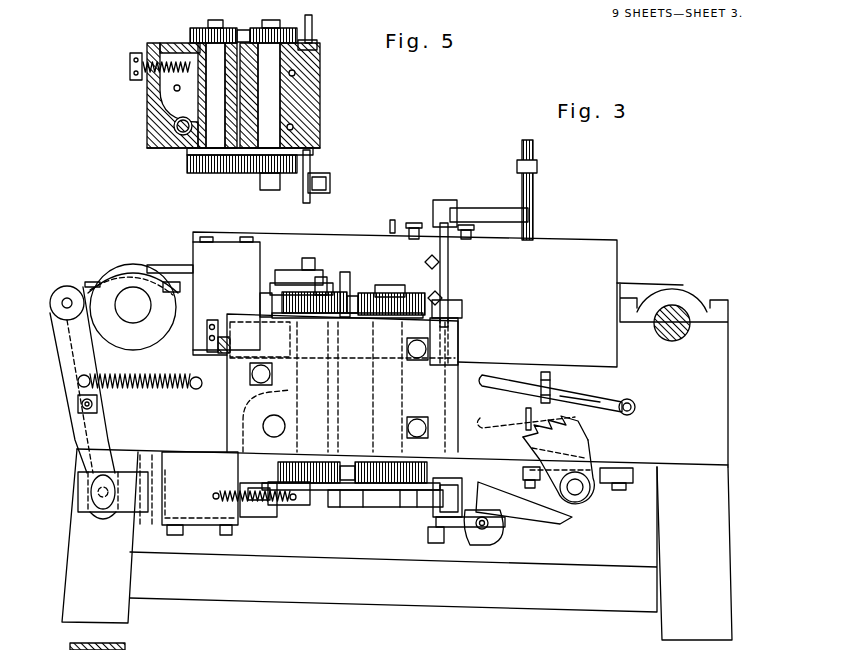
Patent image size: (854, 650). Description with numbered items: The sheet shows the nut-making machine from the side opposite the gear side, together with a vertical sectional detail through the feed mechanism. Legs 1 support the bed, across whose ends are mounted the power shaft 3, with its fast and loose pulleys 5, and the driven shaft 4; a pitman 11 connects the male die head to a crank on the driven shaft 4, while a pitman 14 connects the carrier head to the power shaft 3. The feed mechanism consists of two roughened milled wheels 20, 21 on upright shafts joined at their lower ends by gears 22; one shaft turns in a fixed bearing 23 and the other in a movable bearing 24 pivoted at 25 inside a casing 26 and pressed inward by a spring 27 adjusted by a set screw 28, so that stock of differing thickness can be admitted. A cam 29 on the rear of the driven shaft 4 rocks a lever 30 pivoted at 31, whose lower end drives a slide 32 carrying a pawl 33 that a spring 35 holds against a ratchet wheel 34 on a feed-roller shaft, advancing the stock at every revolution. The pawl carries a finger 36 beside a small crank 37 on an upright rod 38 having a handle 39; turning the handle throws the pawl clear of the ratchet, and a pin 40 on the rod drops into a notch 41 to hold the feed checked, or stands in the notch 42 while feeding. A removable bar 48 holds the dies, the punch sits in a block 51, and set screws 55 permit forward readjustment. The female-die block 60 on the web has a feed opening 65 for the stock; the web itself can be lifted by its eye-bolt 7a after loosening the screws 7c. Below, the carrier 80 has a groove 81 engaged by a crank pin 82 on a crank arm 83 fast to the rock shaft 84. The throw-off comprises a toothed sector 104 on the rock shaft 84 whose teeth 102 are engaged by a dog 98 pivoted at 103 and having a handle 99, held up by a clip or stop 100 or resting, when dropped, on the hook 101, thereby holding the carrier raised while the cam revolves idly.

In FIG. 3, the legs 1 is at (75, 598).
In FIG. 3, the power shaft 3 is at (682, 310).
In FIG. 3, the driven shaft 4 is at (128, 300).
In FIG. 3, the fast and loose pulleys 5 is at (352, 318).
In FIG. 3, the ring or eye-bolt 7a is at (393, 220).
In FIG. 3, the screws 7c is at (440, 264).
In FIG. 3, the pitman 11 is at (163, 270).
In FIG. 3, the pitman 14 is at (645, 283).
In FIG. 5, the milled wheel 20 is at (205, 35).
In FIG. 3, the milled wheel 20 is at (312, 318).
In FIG. 5, the milled wheel 21 is at (298, 40).
In FIG. 3, the milled wheel 21 is at (394, 318).
In FIG. 5, the gears 22 is at (232, 173).
In FIG. 3, the gears 22 is at (300, 486).
In FIG. 5, the fixed bearing 23 is at (320, 100).
In FIG. 5, the movable bearing 24 is at (193, 93).
In FIG. 3, the movable bearing 24 is at (243, 404).
In FIG. 5, the pivot 25 is at (152, 135).
In FIG. 3, the pivot 25 is at (280, 426).
In FIG. 5, the casing 26 is at (147, 100).
In FIG. 3, the casing 26 is at (233, 393).
In FIG. 5, the spring 27 is at (183, 45).
In FIG. 3, the spring 27 is at (262, 312).
In FIG. 5, the set screw 28 is at (130, 66).
In FIG. 3, the set screw 28 is at (207, 338).
In FIG. 3, the cam 29 is at (88, 296).
In FIG. 3, the lever 30 is at (65, 345).
In FIG. 3, the pivot 31 is at (78, 403).
In FIG. 3, the slide 32 is at (107, 536).
In FIG. 3, the pawl 33 is at (322, 500).
In FIG. 3, the ratchet wheel 34 is at (400, 514).
In FIG. 3, the spring 35 is at (224, 494).
In FIG. 3, the finger 36 is at (505, 530).
In FIG. 5, the small crank 37 is at (330, 181).
In FIG. 3, the small crank 37 is at (460, 528).
In FIG. 5, the upright rod 38 is at (310, 160).
In FIG. 3, the upright rod 38 is at (448, 277).
In FIG. 3, the handle 39 is at (488, 210).
In FIG. 5, the pin 40 is at (317, 50).
In FIG. 3, the pin 40 is at (448, 333).
In FIG. 3, the notch 41 is at (464, 312).
In FIG. 3, the notch 42 is at (455, 302).
In FIG. 3, the removable bar 48 is at (296, 283).
In FIG. 3, the block 51 is at (265, 292).
In FIG. 3, the set screws 55 is at (260, 292).
In FIG. 3, the block 60 is at (345, 273).
In FIG. 3, the feed opening 65 is at (356, 296).
In FIG. 3, the carrier 80 is at (480, 530).
In FIG. 3, the groove 81 is at (428, 542).
In FIG. 3, the crank pin 82 is at (490, 526).
In FIG. 3, the crank arm 83 is at (540, 517).
In FIG. 3, the rock shaft 84 is at (578, 492).
In FIG. 3, the dog 98 is at (576, 400).
In FIG. 3, the handle 99 is at (502, 375).
In FIG. 3, the clip or stop 100 is at (548, 376).
In FIG. 3, the stop or hook 101 is at (524, 416).
In FIG. 3, the teeth 102 is at (582, 432).
In FIG. 3, the pivot 103 is at (634, 407).
In FIG. 3, the toothed sector 104 is at (598, 458).